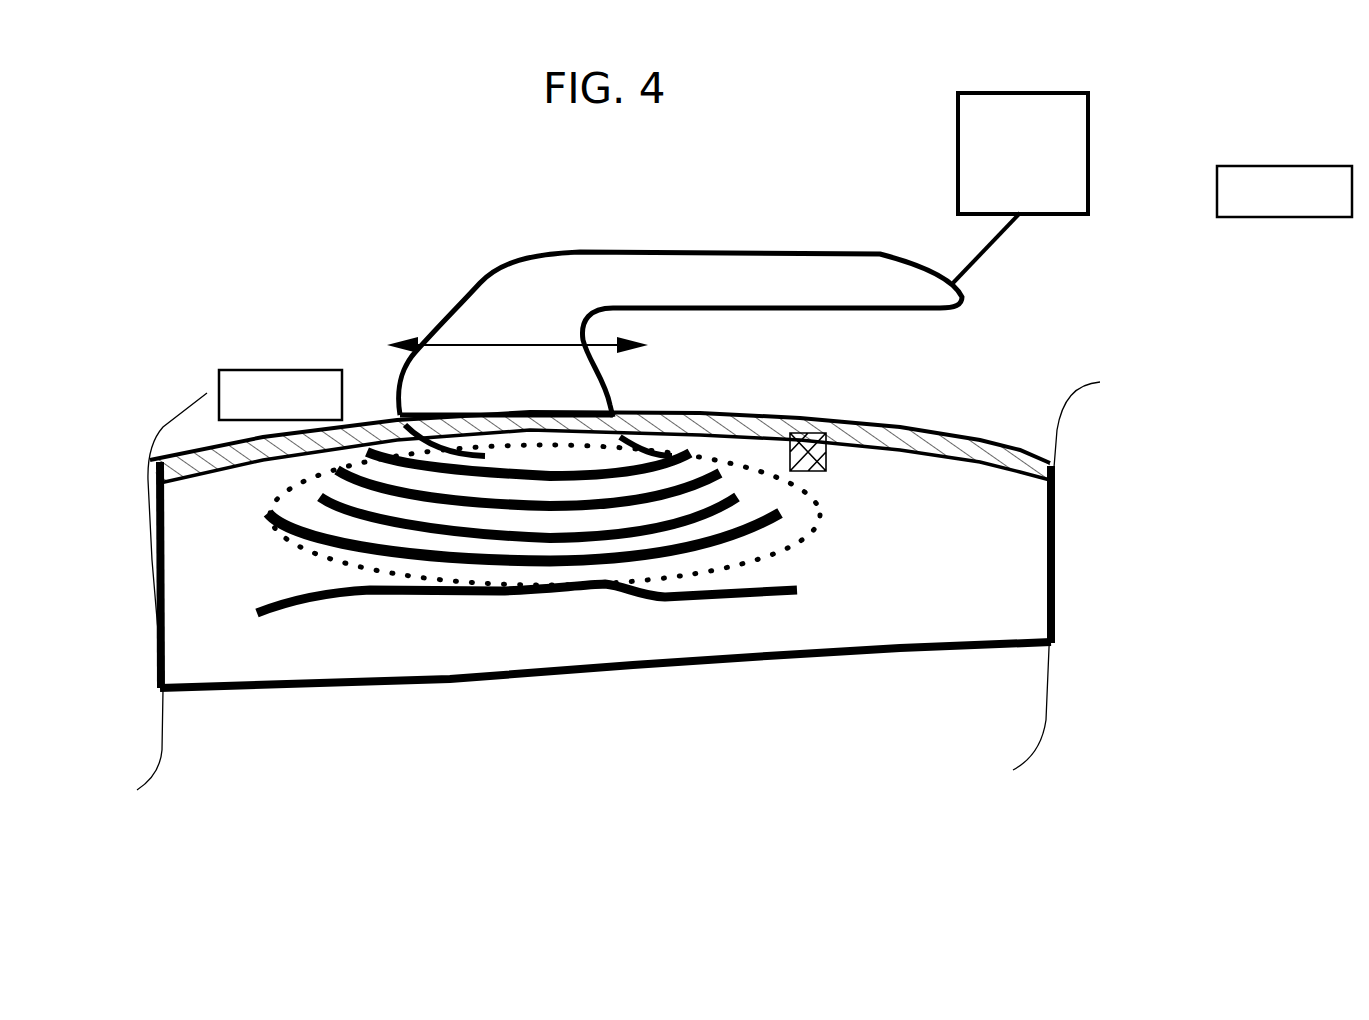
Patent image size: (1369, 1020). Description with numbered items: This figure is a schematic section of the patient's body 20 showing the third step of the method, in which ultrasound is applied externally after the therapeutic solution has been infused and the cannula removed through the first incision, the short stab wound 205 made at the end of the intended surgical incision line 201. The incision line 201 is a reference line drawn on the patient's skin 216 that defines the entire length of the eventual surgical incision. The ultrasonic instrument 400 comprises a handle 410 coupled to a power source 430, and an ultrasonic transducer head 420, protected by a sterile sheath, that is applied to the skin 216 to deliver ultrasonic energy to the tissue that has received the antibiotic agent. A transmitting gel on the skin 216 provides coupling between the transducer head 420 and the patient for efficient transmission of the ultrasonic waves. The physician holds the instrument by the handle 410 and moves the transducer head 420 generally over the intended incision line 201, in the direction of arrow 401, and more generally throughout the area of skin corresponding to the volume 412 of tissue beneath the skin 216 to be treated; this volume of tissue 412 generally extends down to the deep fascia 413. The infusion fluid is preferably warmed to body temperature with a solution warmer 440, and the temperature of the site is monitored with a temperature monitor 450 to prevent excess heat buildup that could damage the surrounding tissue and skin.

The patient's body 20 is at (208, 285).
The ultrasonic instrument 400 is at (430, 251).
The arrow 401 is at (517, 333).
The handle 410 is at (682, 249).
The ultrasonic transducer head 420 is at (542, 393).
The power source 430 is at (1020, 91).
The solution warmer 440 is at (1284, 191).
The temperature monitor 450 is at (280, 395).
The incision line 201 is at (377, 420).
The stab wound 205 is at (820, 410).
The skin 216 is at (1023, 440).
The volume of tissue 412 is at (803, 553).
The deep fascia 413 is at (445, 608).